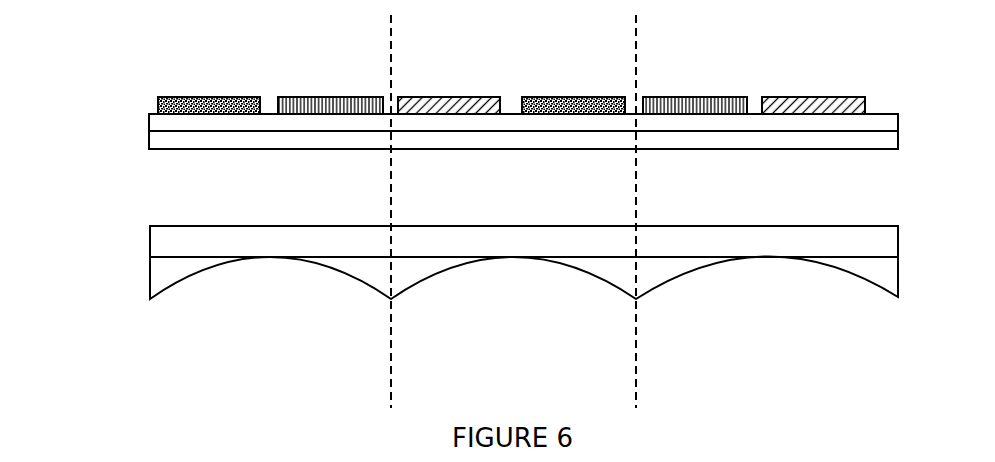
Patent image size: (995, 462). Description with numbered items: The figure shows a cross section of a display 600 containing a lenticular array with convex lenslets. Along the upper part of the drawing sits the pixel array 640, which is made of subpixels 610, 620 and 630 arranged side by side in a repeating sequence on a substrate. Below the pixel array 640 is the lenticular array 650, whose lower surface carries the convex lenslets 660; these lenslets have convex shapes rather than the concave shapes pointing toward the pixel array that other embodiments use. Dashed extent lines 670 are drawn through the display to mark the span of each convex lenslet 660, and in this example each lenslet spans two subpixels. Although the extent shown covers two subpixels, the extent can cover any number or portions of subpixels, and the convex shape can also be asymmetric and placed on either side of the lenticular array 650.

The display device 600 is at (179, 325).
The subpixel 610 is at (200, 100).
The subpixel 620 is at (377, 96).
The subpixel 630 is at (420, 100).
The pixel array 640 is at (149, 120).
The lenticular array 650 is at (150, 243).
The convex lenslets 660 is at (150, 277).
The extent lines 670 is at (600, 294).